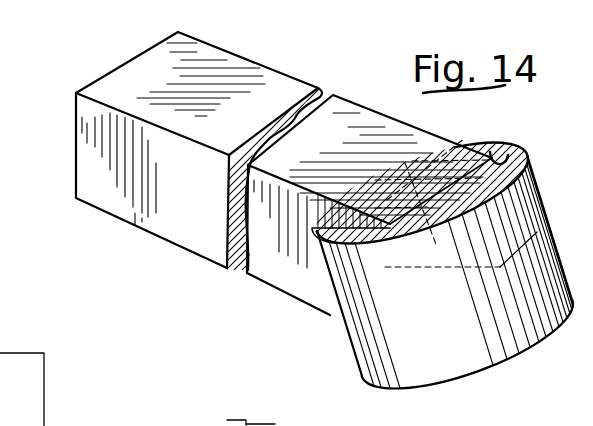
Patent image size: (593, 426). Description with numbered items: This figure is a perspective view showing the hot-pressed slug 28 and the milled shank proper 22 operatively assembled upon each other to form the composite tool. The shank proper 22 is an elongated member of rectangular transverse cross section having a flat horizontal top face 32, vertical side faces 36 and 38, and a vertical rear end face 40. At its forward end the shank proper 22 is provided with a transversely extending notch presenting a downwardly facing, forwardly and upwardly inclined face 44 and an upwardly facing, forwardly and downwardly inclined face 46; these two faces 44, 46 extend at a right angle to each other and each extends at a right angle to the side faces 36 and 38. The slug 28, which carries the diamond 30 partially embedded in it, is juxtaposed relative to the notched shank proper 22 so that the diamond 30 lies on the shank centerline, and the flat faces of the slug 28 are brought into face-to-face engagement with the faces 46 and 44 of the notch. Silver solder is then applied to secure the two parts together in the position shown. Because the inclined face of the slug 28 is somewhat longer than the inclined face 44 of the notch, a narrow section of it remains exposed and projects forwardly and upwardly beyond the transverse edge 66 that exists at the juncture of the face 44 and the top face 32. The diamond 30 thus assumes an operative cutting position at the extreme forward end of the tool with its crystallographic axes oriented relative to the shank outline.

The shank proper 22 is at (279, 98).
The hot-pressed slug 28 is at (399, 333).
The diamond 30 is at (497, 182).
The top face 32 is at (183, 52).
The side face 36 is at (180, 223).
The side face 38 is at (333, 96).
The rear end face 40 is at (76, 152).
The inclined face of notch 44 is at (312, 243).
The inclined face of notch 46 is at (418, 178).
The transverse edge 66 is at (503, 158).